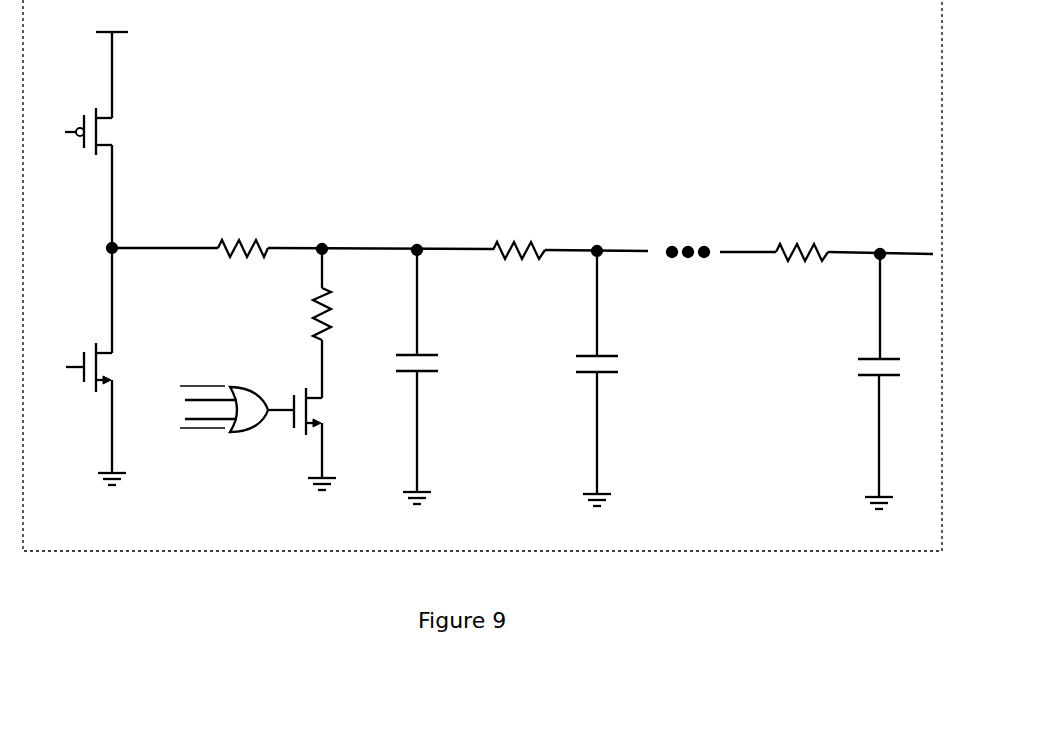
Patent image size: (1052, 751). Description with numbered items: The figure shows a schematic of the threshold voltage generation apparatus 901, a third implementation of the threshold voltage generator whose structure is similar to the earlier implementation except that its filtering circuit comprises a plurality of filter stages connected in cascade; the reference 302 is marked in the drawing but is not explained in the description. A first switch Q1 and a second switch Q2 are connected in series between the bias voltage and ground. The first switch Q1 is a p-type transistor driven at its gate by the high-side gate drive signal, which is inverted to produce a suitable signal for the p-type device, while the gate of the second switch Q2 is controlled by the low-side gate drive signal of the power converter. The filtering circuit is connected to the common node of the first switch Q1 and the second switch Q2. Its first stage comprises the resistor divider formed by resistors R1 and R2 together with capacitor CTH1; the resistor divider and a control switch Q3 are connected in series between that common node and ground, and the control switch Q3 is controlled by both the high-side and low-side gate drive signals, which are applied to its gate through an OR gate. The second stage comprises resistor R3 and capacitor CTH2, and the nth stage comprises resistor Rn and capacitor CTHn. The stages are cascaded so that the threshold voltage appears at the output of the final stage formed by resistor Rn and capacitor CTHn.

The RC threshold network 302 is at (598, 545).
The threshold voltage generation apparatus 901 is at (929, 546).
The first switch Q1 is at (88, 130).
The second switch Q2 is at (85, 367).
The control switch Q3 is at (321, 415).
The resistor R1 is at (243, 236).
The resistor R2 is at (334, 294).
The resistor R3 is at (519, 238).
The resistor Rn is at (802, 240).
The capacitor CTH1 is at (438, 377).
The capacitor CTH2 is at (618, 378).
The capacitor CTHn is at (858, 381).